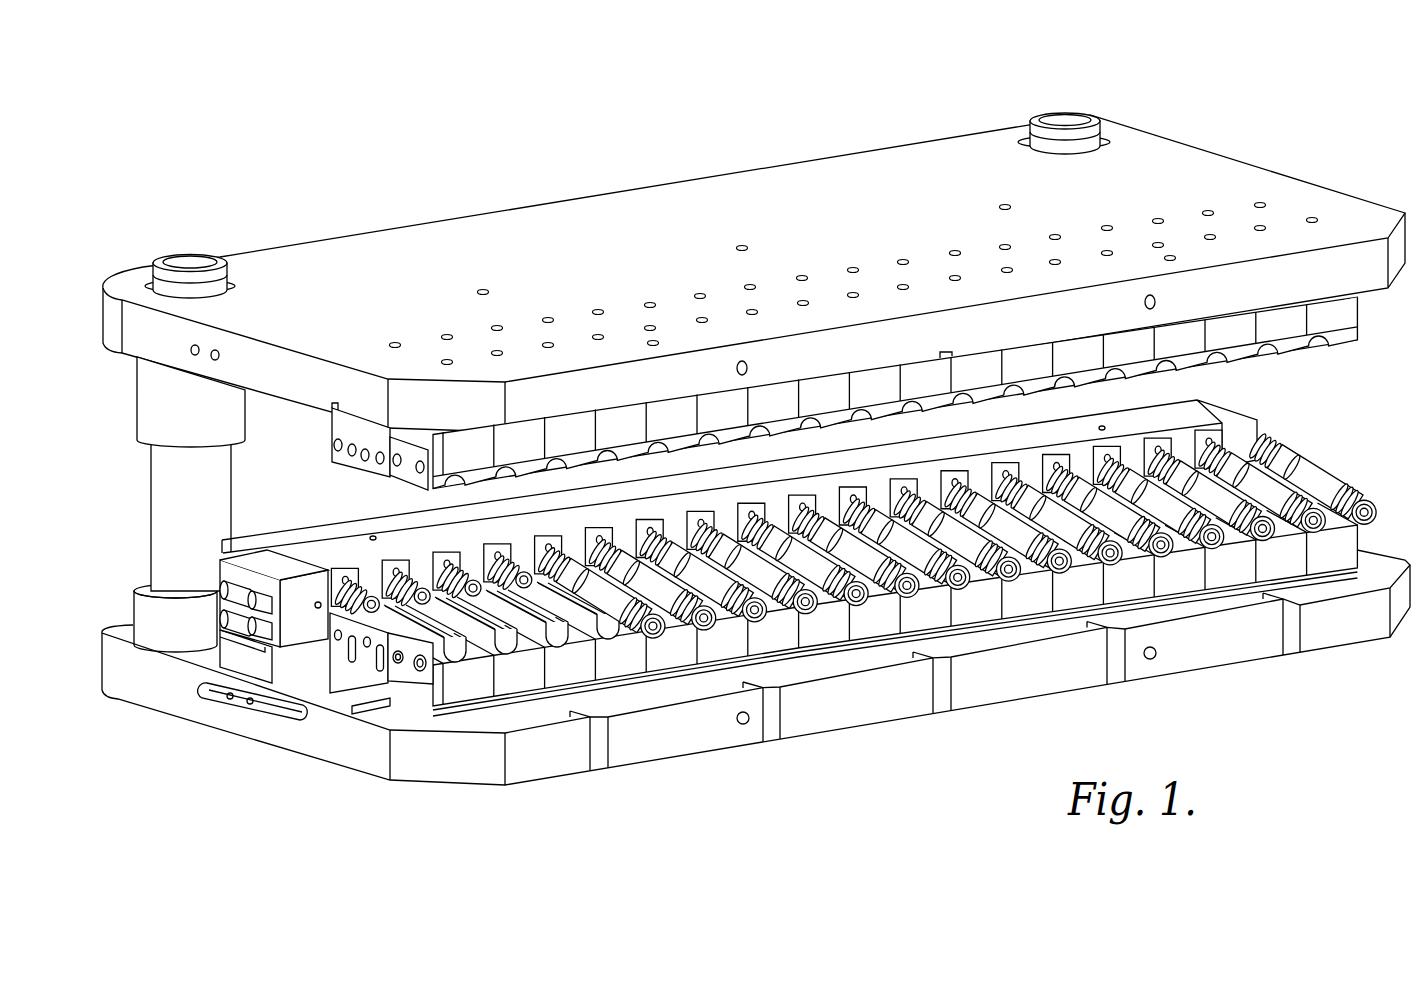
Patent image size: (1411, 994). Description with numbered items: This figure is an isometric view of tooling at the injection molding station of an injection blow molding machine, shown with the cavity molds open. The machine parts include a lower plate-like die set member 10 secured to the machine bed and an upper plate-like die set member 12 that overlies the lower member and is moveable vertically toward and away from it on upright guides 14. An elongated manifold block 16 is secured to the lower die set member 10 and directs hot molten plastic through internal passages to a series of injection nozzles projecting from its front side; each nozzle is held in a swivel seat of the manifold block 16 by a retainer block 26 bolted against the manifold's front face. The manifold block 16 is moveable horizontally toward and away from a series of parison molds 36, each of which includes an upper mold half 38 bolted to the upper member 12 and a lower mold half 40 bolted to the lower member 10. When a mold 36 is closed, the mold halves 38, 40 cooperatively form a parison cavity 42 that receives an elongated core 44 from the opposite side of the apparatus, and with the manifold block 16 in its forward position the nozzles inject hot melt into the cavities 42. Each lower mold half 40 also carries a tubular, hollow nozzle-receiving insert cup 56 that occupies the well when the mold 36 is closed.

The lower die set member 10 is at (166, 693).
The upper die set member 12 is at (478, 233).
The upright guides 14 is at (189, 257).
The manifold block 16 is at (298, 627).
The retainer block 26 is at (336, 588).
The parison molds 36 is at (350, 481).
The upper mold half 38 is at (349, 427).
The lower mold half 40 is at (421, 699).
The parison cavity 42 is at (400, 623).
The elongated core 44 is at (587, 580).
The insert cup 56 is at (361, 598).